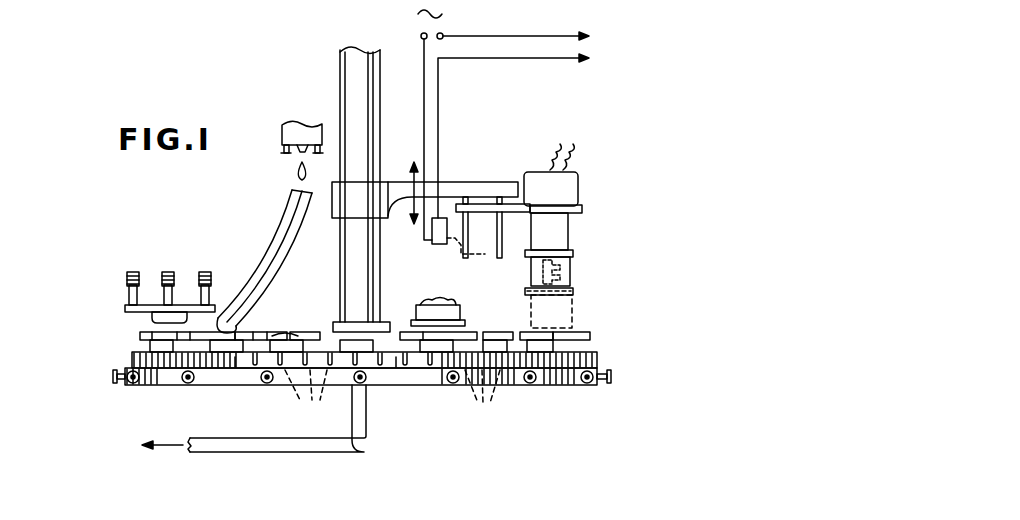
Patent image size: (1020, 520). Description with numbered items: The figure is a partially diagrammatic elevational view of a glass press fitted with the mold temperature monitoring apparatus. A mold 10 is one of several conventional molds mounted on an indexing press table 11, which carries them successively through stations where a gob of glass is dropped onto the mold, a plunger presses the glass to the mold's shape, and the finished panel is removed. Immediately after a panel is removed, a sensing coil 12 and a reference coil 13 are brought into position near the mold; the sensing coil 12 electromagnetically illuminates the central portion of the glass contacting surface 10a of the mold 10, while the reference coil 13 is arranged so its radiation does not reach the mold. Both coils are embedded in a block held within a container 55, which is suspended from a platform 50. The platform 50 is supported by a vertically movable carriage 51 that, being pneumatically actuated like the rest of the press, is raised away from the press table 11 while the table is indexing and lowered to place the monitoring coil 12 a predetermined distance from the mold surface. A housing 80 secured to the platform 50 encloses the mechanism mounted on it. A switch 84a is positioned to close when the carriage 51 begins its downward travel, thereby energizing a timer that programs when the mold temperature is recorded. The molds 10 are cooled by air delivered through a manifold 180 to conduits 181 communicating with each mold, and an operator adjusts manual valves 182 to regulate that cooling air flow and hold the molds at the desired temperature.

The mold 10 is at (230, 335).
The glass contacting surface 10a is at (283, 331).
The indexing press table 11 is at (393, 378).
The sensing coil 12 is at (572, 278).
The reference coil 13 is at (562, 262).
The container 55 is at (582, 270).
The platform 50 is at (488, 212).
The carriage 51 is at (403, 192).
The housing 80 is at (578, 195).
The switch 84a is at (438, 245).
The manifold 180 is at (273, 446).
The conduits 181 is at (394, 400).
The valves 182 is at (190, 386).